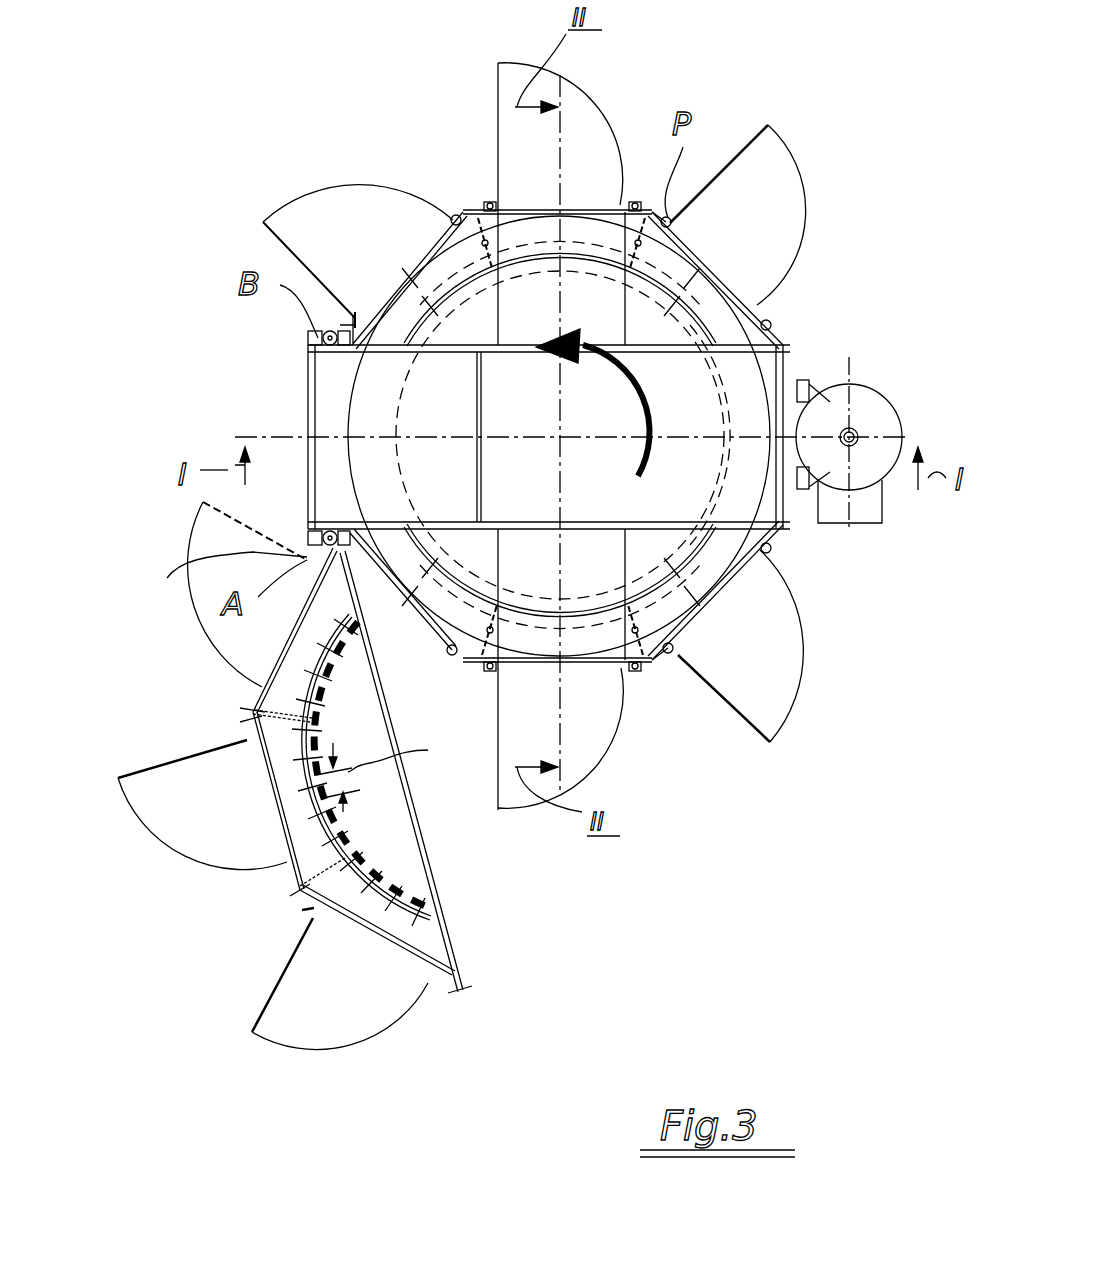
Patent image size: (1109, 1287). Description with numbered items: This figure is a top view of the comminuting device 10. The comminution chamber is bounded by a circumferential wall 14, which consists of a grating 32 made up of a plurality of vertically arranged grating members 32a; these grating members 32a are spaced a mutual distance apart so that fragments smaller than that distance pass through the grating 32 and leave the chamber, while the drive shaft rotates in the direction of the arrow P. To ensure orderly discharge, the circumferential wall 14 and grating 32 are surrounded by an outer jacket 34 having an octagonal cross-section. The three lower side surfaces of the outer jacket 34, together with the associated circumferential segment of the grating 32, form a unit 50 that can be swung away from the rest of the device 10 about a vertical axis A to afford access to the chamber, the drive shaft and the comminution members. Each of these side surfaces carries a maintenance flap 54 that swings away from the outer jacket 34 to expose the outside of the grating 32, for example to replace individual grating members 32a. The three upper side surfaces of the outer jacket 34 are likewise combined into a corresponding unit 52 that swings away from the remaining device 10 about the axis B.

The comminuting device 10 is at (170, 108).
The circumferential wall 14 is at (442, 912).
The grating 32 is at (488, 262).
The grating members 32a is at (395, 876).
The outer jacket 34 is at (741, 294).
The unit 50 is at (353, 832).
The unit 52 is at (760, 222).
The maintenance flap 54 is at (190, 757).